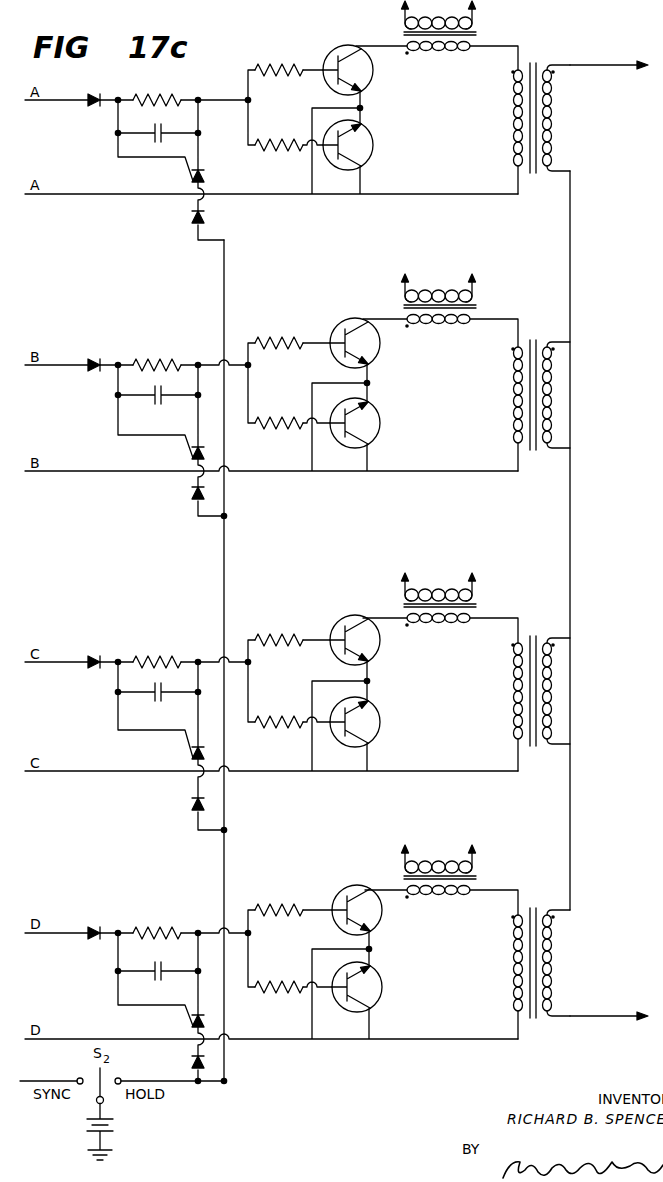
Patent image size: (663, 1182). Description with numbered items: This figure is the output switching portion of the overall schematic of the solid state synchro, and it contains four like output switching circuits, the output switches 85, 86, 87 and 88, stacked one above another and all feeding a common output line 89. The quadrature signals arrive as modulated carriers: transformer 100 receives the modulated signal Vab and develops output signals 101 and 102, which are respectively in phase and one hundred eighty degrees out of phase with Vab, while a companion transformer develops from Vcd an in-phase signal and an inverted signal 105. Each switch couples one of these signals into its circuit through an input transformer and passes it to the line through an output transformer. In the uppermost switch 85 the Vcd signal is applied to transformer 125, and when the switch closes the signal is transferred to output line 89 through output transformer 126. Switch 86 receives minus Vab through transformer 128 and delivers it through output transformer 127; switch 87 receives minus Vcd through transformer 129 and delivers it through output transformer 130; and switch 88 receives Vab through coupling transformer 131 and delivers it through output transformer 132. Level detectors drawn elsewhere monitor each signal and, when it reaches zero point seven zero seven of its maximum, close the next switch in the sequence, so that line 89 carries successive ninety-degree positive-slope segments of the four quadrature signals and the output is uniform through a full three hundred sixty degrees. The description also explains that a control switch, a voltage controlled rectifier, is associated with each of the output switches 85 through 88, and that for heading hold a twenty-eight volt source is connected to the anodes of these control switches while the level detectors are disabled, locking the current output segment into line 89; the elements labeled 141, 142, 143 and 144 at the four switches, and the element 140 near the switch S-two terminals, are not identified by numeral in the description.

The output switch 85 is at (345, 39).
The output switch 86 is at (345, 314).
The output switch 87 is at (344, 614).
The output switch 88 is at (346, 881).
The output line 89 is at (598, 66).
The transformer 100 is at (440, 19).
The output signal 101 is at (454, 837).
The output signal 102 is at (456, 266).
The output signal 105 is at (454, 564).
The transformer 125 is at (478, 40).
The output transformer 126 is at (535, 62).
The output transformer 127 is at (535, 338).
The transformer 128 is at (480, 312).
The transformer 129 is at (478, 610).
The output transformer 130 is at (535, 636).
The coupling transformer 131 is at (480, 878).
The output transformer 132 is at (535, 912).
The switch S2 140 is at (90, 1070).
The silicon controlled rectifier 141 is at (192, 1023).
The silicon controlled rectifier 142 is at (192, 757).
The silicon controlled rectifier 143 is at (192, 455).
The silicon controlled rectifier 144 is at (210, 176).